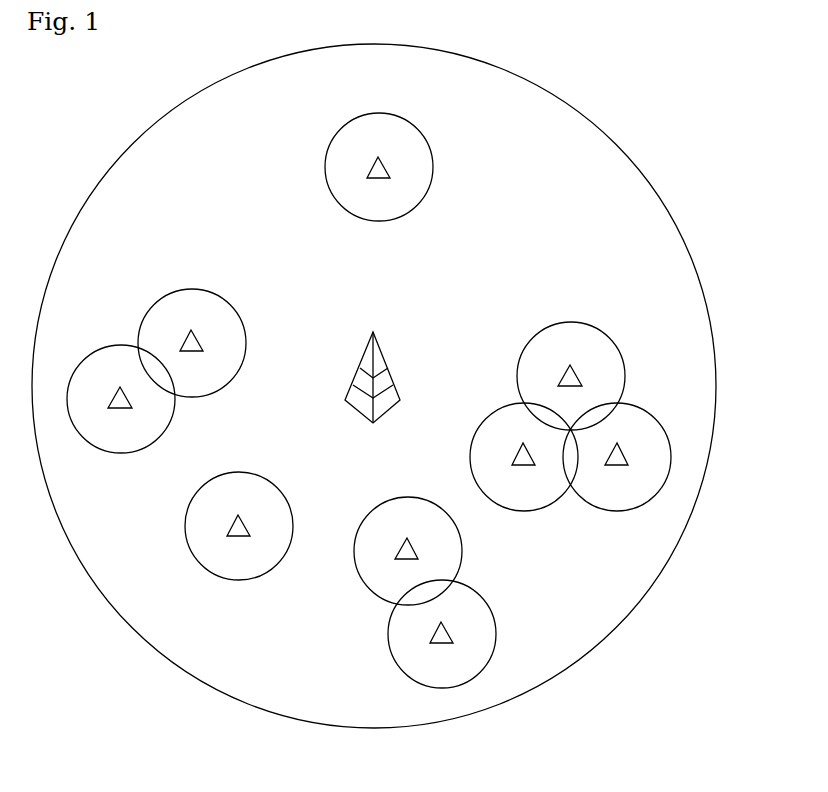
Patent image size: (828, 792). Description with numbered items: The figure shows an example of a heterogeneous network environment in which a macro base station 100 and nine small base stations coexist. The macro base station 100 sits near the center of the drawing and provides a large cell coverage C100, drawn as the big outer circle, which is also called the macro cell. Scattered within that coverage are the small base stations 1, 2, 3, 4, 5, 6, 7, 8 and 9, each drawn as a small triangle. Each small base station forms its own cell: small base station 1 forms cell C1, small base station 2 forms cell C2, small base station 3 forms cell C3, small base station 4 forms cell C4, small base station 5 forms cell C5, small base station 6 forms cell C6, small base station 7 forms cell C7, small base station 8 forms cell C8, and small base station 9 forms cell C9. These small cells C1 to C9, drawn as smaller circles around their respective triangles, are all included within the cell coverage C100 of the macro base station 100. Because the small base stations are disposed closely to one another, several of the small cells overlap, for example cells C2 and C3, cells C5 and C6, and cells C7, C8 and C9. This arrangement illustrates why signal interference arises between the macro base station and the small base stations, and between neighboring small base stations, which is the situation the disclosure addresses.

The cell coverage C100 is at (600, 128).
The macro base station 100 is at (381, 344).
The cell C1 is at (432, 125).
The small base station 1 is at (371, 164).
The cell C2 is at (236, 300).
The small base station 2 is at (199, 342).
The cell C3 is at (97, 355).
The small base station 3 is at (113, 397).
The cell C4 is at (200, 486).
The small base station 4 is at (233, 522).
The cell C5 is at (370, 512).
The small base station 5 is at (402, 546).
The cell C6 is at (481, 594).
The small base station 6 is at (449, 632).
The cell C7 is at (489, 415).
The small base station 7 is at (516, 451).
The cell C8 is at (636, 407).
The small base station 8 is at (624, 453).
The cell C9 is at (609, 333).
The small base station 9 is at (578, 373).